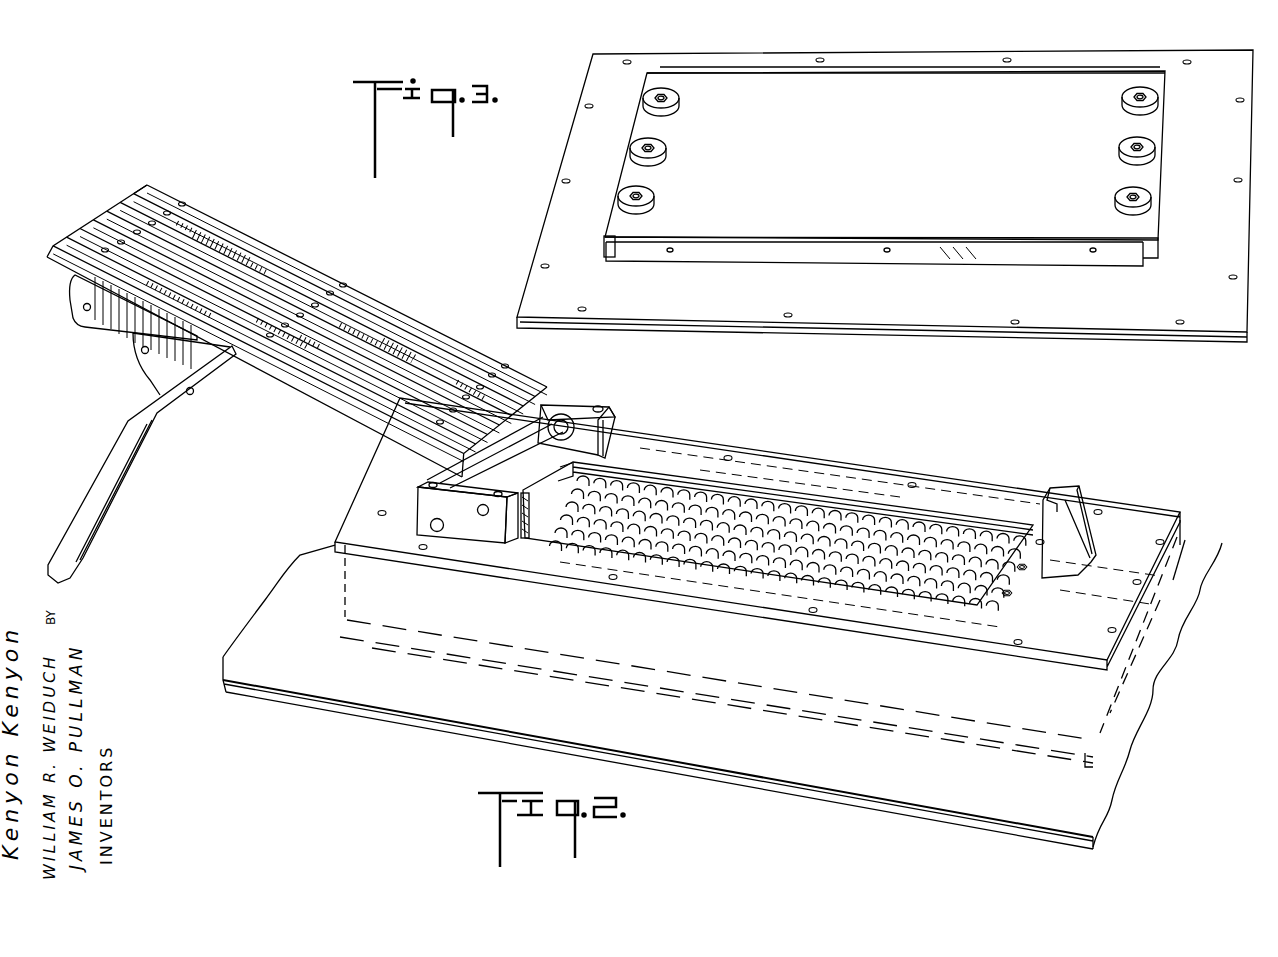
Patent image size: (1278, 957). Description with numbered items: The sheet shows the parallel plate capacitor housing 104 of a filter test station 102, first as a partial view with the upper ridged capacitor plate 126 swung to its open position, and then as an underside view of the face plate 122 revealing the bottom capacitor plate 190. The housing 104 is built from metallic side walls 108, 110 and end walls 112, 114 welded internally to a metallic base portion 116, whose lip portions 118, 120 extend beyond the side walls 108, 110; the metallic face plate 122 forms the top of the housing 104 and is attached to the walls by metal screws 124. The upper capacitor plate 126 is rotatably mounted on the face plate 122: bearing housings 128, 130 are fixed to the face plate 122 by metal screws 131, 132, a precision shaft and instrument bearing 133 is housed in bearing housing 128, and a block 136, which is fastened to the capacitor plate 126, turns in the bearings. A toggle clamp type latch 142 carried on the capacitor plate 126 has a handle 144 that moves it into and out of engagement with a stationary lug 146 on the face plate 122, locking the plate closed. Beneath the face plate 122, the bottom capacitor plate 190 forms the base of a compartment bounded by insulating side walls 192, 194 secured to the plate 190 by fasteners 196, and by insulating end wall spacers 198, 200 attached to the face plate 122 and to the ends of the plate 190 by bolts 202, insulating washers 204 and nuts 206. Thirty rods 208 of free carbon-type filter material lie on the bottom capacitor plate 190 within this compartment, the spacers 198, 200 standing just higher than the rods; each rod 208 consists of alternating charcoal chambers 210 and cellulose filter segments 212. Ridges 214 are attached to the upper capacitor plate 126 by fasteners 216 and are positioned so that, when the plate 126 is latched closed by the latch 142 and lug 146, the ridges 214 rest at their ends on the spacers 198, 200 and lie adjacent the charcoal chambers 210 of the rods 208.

In FIG. 2, the test station 102 is at (1093, 808).
In FIG. 2, the parallel plate capacitor housing 104 is at (807, 440).
In FIG. 2, the side wall 108 is at (1170, 583).
In FIG. 2, the side wall 110 is at (1098, 713).
In FIG. 2, the end wall 112 is at (345, 590).
In FIG. 2, the end wall 114 is at (1152, 612).
In FIG. 2, the base portion 116 is at (1137, 673).
In FIG. 2, the lip portion 118 is at (1177, 580).
In FIG. 2, the lip portion 120 is at (1095, 757).
In FIG. 3, the face plate 122 is at (1232, 332).
In FIG. 2, the face plate 122 is at (1148, 525).
In FIG. 3, the metal screws 124 is at (1232, 274).
In FIG. 2, the metal screws 124 is at (732, 457).
In FIG. 2, the upper capacitor plate 126 is at (315, 390).
In FIG. 2, the bearing housing 128 is at (617, 410).
In FIG. 2, the bearing housing 130 is at (427, 505).
In FIG. 2, the metal screw 131 is at (601, 402).
In FIG. 2, the metal screw 132 is at (460, 483).
In FIG. 2, the precision shaft and instrument bearing 133 is at (617, 422).
In FIG. 2, the block 136 is at (430, 457).
In FIG. 2, the latch 142 is at (120, 325).
In FIG. 2, the handle 144 is at (130, 470).
In FIG. 2, the stationary lug 146 is at (1085, 502).
In FIG. 3, the bottom capacitor plate 190 is at (907, 146).
In FIG. 3, the side wall 192 is at (974, 257).
In FIG. 3, the side wall 194 is at (956, 62).
In FIG. 3, the fasteners 196 is at (1090, 255).
In FIG. 3, the end wall spacer 198 is at (610, 253).
In FIG. 2, the end wall spacer 198 is at (538, 537).
In FIG. 2, the end wall spacer 200 is at (983, 602).
In FIG. 2, the bolts 202 is at (1022, 568).
In FIG. 3, the insulating washers 204 is at (1150, 150).
In FIG. 3, the nuts 206 is at (1148, 95).
In FIG. 2, the rods 208 is at (790, 498).
In FIG. 2, the charcoal chambers 210 is at (870, 535).
In FIG. 2, the cellulose filter segments 212 is at (925, 521).
In FIG. 2, the ridges 214 is at (98, 214).
In FIG. 2, the fasteners 216 is at (185, 205).